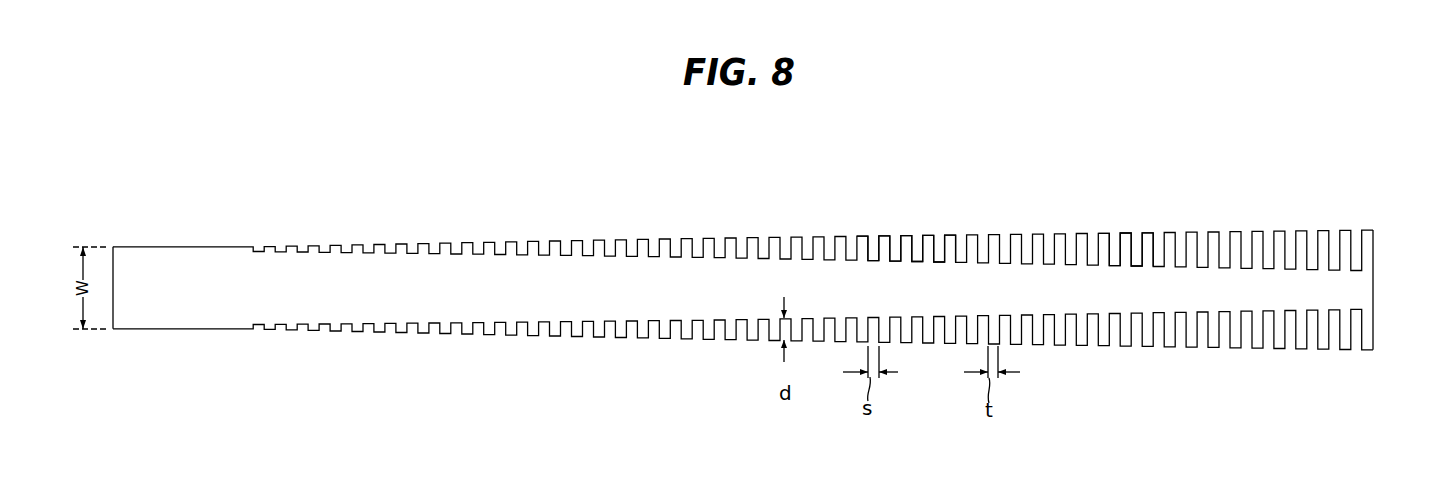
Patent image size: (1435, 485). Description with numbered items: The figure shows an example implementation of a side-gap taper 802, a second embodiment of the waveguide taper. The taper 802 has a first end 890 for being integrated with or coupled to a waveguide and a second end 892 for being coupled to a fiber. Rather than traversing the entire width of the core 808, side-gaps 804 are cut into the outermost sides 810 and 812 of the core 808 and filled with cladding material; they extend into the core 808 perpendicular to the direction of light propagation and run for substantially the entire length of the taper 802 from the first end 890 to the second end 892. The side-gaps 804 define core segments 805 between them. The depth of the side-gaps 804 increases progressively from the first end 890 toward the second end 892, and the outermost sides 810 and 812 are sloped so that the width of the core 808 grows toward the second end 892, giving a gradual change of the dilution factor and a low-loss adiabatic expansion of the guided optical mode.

The side-gap taper 802 is at (733, 177).
The side-gaps 804 is at (939, 236).
The core segments 805 is at (1150, 238).
The core 808 is at (264, 305).
The outermost side 810 is at (188, 247).
The outermost side 812 is at (237, 329).
The first end 890 is at (140, 344).
The second end 892 is at (1403, 245).